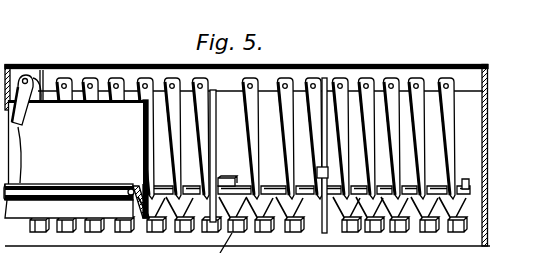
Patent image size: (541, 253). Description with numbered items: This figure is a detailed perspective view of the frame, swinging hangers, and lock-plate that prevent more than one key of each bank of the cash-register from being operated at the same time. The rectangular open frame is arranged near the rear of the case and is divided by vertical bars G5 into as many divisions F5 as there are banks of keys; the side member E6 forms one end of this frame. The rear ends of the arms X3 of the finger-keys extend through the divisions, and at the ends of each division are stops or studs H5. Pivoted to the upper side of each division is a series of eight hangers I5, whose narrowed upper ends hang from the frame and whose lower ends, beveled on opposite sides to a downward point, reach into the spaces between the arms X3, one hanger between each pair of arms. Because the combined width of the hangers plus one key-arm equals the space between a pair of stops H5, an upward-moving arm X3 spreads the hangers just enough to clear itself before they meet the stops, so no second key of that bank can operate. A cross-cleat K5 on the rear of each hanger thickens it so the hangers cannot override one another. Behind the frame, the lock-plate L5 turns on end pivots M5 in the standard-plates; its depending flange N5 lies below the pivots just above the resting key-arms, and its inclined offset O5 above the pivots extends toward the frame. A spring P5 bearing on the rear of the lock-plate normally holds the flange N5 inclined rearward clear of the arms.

The division of the frame F5 is at (44, 110).
The side frame E6 is at (483, 98).
The cross-cleat K5 is at (352, 191).
The hanger I5 is at (256, 138).
The vertical bar G5 is at (229, 155).
The stop or stud H5 is at (502, 185).
The arm of the finger-key X3 is at (502, 226).
The lock-plate L5 is at (78, 159).
The inclined offset O5 is at (68, 183).
The depending flange N5 is at (69, 208).
The pivot M5 is at (131, 189).
The spring P5 is at (15, 124).